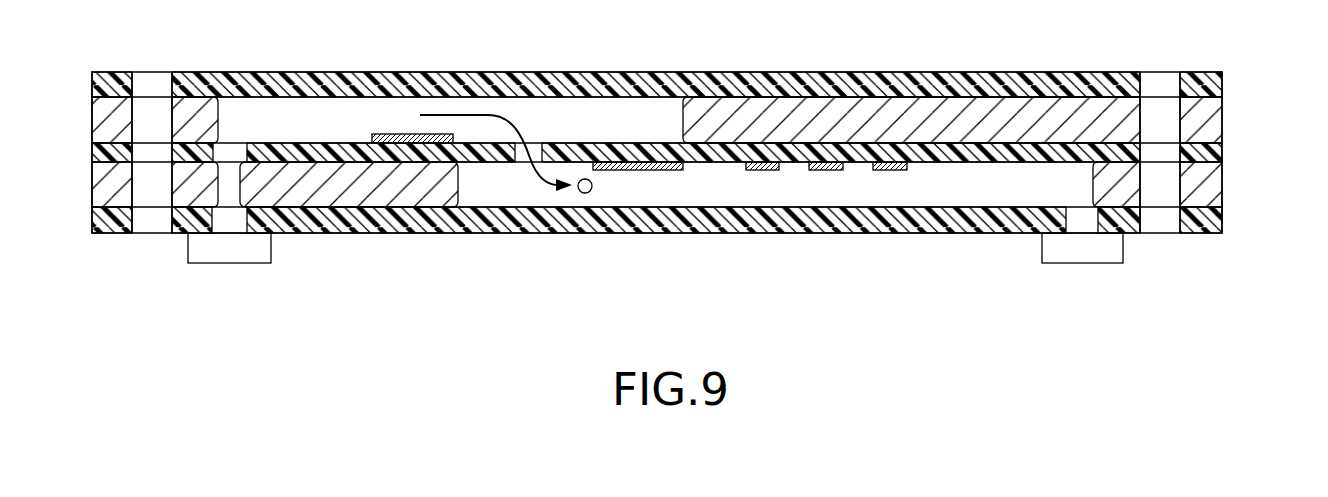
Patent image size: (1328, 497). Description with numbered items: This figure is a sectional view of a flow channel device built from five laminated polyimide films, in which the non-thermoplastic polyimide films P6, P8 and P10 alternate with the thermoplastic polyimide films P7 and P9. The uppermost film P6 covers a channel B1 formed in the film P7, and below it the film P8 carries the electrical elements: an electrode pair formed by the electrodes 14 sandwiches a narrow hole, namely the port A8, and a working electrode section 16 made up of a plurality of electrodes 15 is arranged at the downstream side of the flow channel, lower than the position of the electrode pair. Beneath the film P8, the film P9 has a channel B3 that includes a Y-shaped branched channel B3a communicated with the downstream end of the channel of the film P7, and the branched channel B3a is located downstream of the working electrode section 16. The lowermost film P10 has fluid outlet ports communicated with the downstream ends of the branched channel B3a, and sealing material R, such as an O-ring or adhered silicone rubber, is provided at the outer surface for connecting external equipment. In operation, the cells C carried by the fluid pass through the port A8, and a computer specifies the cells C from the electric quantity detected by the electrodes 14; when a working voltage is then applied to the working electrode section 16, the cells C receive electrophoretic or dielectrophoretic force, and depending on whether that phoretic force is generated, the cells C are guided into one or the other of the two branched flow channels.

The electrodes 14 is at (398, 134).
The electrodes 15 is at (912, 272).
The working electrode section 16 is at (827, 244).
The channel B1 is at (584, 118).
The channel B3 is at (702, 193).
The branched channel B3a is at (975, 183).
The port A8 is at (520, 157).
The cells C is at (585, 193).
The non-thermoplastic polyimide film P6 is at (1222, 85).
The thermoplastic polyimide film P7 is at (1222, 125).
The non-thermoplastic polyimide film P8 is at (1222, 150).
The thermoplastic polyimide film P9 is at (1222, 183).
The non-thermoplastic polyimide film P10 is at (1222, 215).
The sealing material R is at (230, 248).